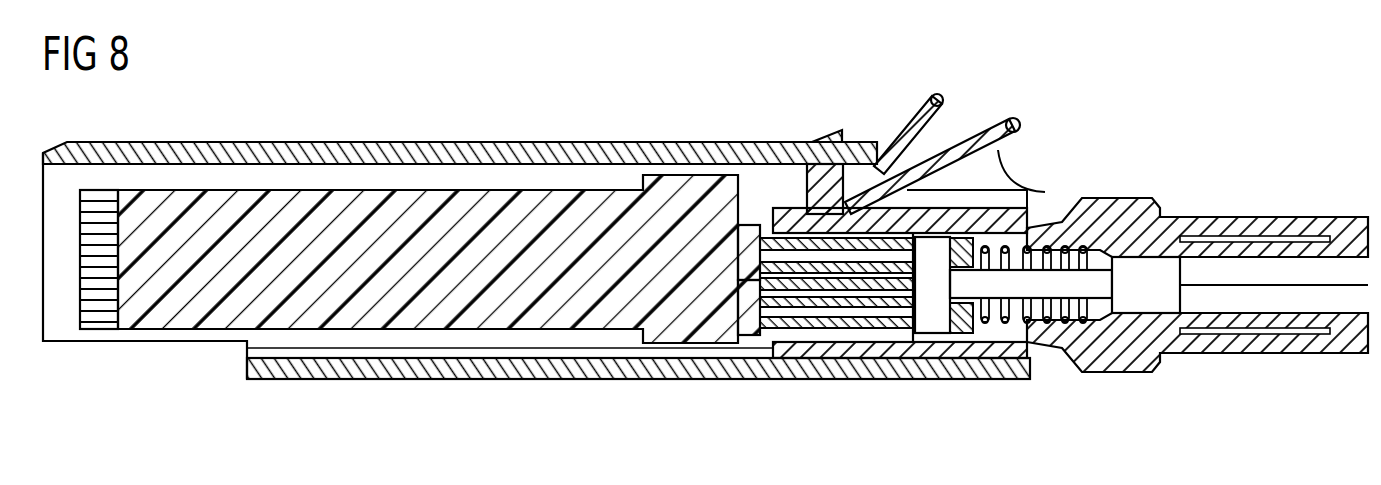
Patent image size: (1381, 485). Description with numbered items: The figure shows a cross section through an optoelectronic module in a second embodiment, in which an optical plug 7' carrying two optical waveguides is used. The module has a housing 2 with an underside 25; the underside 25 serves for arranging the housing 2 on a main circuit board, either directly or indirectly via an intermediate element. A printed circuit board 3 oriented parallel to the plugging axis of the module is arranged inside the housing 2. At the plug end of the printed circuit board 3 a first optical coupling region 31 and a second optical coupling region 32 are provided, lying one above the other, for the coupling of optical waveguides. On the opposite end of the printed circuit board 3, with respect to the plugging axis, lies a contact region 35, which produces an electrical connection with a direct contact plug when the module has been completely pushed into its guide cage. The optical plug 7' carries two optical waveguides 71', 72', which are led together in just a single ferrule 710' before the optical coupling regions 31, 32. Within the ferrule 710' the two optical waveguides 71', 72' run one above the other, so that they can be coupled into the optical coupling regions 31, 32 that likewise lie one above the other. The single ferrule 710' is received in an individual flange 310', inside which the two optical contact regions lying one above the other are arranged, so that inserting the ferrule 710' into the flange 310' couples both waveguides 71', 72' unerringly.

The housing 2 is at (420, 143).
The underside 25 is at (480, 383).
The printed circuit board 3 is at (192, 308).
The contact region 35 is at (97, 312).
The first optical coupling region 31 is at (757, 293).
The second optical coupling region 32 is at (747, 274).
The optical waveguide 72' is at (824, 167).
The optical waveguide 71' is at (836, 347).
The single ferrule 710' is at (855, 335).
The individual flange 310' is at (835, 338).
The optical plug 7' is at (1070, 233).